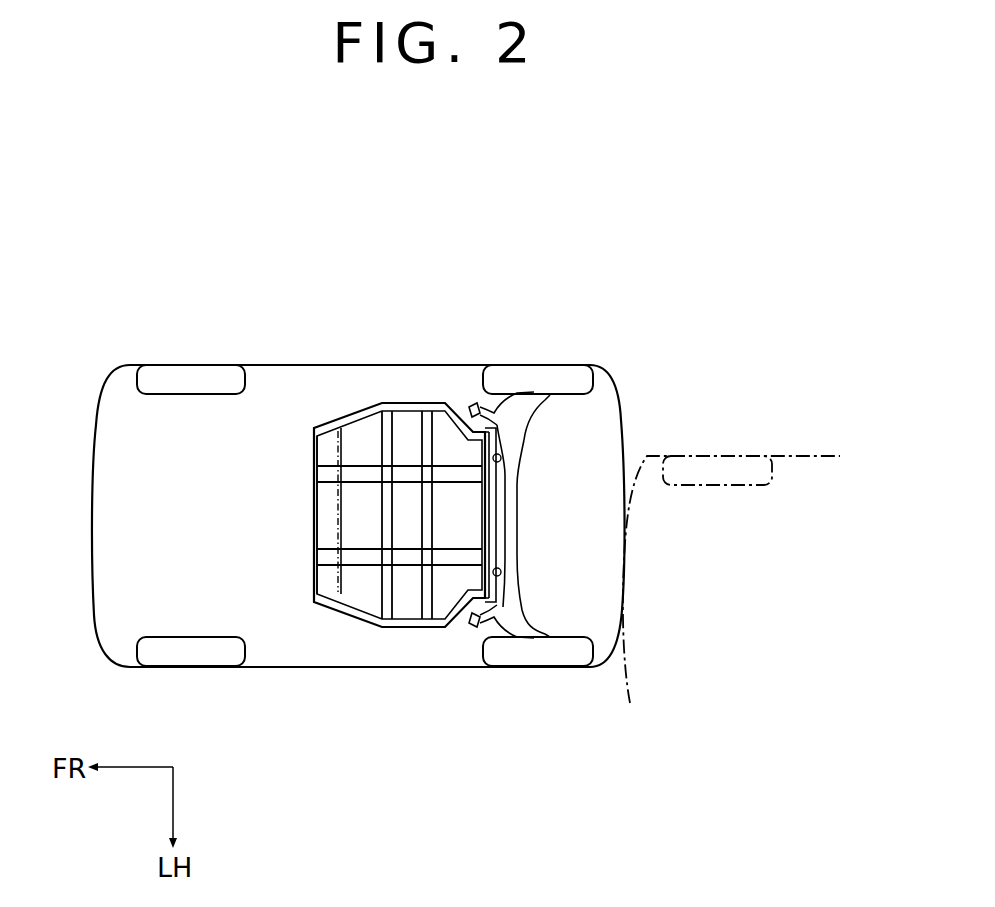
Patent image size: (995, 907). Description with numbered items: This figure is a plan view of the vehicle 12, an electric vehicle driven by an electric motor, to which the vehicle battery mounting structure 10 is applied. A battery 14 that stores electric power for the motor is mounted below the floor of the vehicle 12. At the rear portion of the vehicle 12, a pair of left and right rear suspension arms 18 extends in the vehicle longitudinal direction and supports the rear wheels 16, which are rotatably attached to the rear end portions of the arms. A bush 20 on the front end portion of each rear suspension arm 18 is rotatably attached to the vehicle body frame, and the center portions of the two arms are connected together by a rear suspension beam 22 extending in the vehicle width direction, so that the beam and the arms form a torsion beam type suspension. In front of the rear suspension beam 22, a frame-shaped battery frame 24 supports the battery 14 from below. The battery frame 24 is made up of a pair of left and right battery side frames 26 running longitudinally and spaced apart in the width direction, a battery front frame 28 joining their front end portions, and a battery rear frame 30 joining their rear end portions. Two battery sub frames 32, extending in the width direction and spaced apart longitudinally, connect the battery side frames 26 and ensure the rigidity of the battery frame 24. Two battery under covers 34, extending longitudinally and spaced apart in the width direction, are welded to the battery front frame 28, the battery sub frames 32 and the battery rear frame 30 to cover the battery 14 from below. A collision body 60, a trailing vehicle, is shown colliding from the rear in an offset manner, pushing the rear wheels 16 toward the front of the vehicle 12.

The vehicle battery mounting structure 10 is at (450, 378).
The vehicle 12 is at (380, 294).
The battery 14 is at (355, 614).
The rear wheels 16 is at (562, 377).
The rear suspension arms 18 is at (538, 402).
The bush 20 is at (478, 402).
The rear suspension beam 22 is at (517, 520).
The battery frame 24 is at (362, 404).
The battery side frames 26 is at (413, 403).
The battery front frame 28 is at (327, 522).
The battery rear frame 30 is at (493, 495).
The battery sub frames 32 is at (383, 597).
The battery under cover 34 is at (358, 466).
The collision body 60 is at (786, 448).